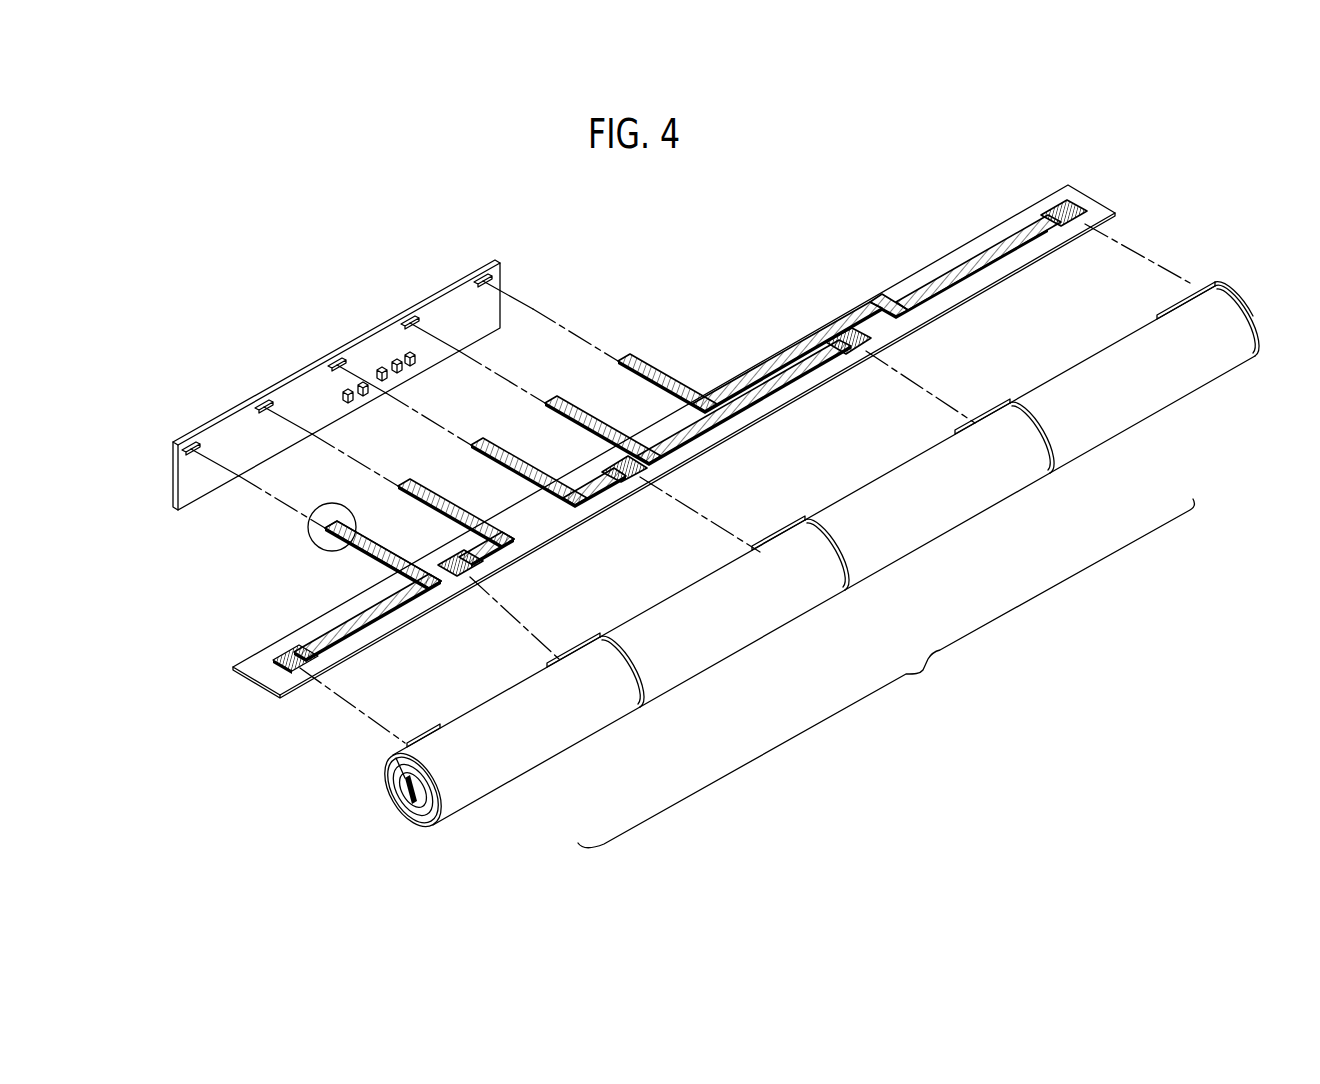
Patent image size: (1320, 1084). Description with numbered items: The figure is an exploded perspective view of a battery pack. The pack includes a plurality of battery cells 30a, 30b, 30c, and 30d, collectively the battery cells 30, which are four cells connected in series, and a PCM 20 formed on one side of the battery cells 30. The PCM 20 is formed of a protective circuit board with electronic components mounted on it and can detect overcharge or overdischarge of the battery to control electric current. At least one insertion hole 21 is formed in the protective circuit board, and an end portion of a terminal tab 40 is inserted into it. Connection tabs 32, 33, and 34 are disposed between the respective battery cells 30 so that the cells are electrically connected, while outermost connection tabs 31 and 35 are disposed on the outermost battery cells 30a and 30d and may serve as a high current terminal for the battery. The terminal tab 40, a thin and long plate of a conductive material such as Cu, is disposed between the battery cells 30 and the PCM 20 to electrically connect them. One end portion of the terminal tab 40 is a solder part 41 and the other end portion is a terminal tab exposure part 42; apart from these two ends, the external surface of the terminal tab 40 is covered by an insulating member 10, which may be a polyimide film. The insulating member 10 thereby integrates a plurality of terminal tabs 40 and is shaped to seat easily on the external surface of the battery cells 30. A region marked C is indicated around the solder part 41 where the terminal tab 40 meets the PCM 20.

The insulating member 10 is at (1093, 194).
The PCM 20 is at (305, 386).
The insertion hole 21 is at (419, 317).
The battery cells 30 is at (886, 673).
The battery cell 30a is at (545, 742).
The battery cell 30b is at (730, 640).
The battery cell 30c is at (937, 517).
The battery cell 30d is at (1120, 412).
The outermost connection tab 31 is at (432, 736).
The connection tab 32 is at (550, 665).
The connection tab 33 is at (797, 527).
The connection tab 34 is at (1000, 409).
The outermost connection tab 35 is at (1213, 288).
The terminal tab 40 is at (365, 568).
The solder part 41 is at (332, 522).
The terminal tab exposure part 42 is at (283, 656).
The connection region C is at (308, 533).